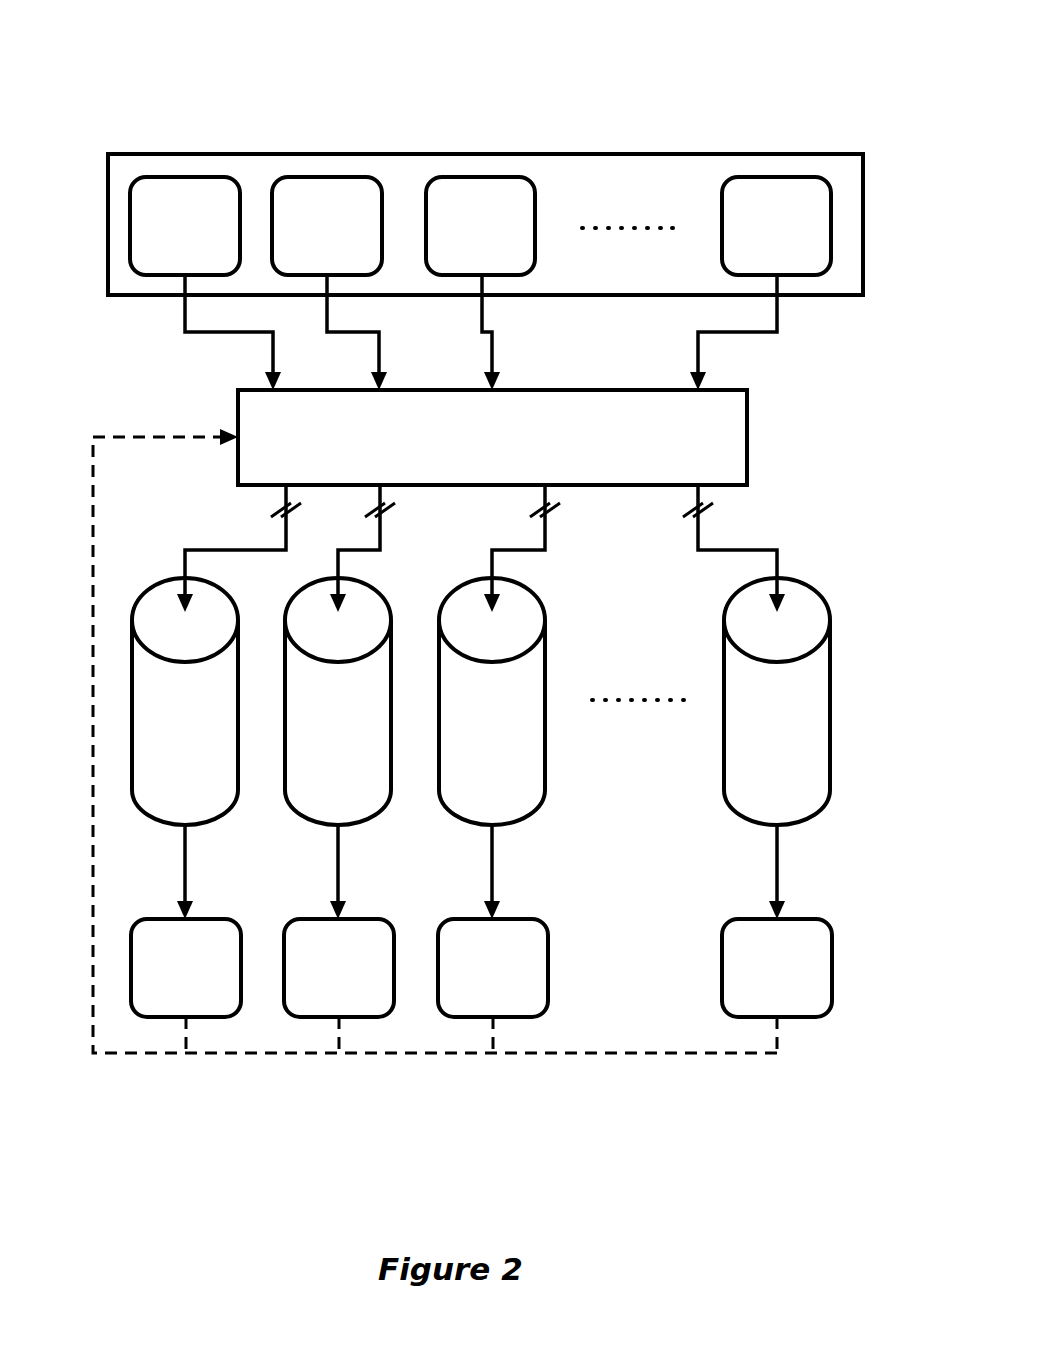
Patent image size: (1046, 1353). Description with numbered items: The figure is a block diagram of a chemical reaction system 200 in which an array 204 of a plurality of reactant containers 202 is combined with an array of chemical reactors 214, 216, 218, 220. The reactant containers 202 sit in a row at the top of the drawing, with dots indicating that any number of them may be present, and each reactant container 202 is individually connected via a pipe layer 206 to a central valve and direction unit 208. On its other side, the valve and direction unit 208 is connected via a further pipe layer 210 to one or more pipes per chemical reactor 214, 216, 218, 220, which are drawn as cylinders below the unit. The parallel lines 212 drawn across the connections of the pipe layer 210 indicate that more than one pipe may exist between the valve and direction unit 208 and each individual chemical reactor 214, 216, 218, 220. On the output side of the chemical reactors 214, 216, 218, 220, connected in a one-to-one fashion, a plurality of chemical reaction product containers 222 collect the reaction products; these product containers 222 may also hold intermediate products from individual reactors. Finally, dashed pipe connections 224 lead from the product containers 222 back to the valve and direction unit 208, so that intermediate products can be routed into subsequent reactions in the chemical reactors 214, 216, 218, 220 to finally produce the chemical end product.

The chemical reaction system 200 is at (757, 80).
The reactant containers 202 is at (804, 242).
The array of reactant containers 204 is at (595, 200).
The pipe layer 206 is at (780, 358).
The valve and direction unit 208 is at (465, 453).
The pipe layer 210 is at (773, 522).
The parallel lines 212 is at (268, 518).
The chemical reactor 214 is at (158, 743).
The chemical reactor 216 is at (311, 743).
The chemical reactor 218 is at (465, 743).
The chemical reactor 220 is at (750, 743).
The chemical reaction product containers 222 is at (804, 978).
The pipe connections 224 is at (300, 1062).